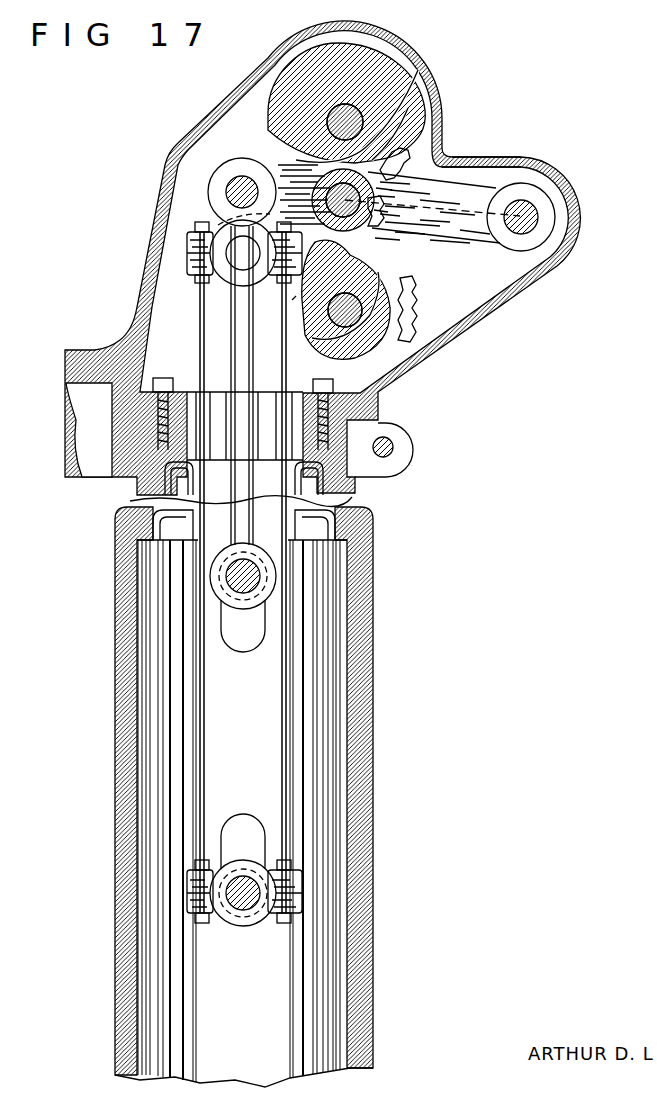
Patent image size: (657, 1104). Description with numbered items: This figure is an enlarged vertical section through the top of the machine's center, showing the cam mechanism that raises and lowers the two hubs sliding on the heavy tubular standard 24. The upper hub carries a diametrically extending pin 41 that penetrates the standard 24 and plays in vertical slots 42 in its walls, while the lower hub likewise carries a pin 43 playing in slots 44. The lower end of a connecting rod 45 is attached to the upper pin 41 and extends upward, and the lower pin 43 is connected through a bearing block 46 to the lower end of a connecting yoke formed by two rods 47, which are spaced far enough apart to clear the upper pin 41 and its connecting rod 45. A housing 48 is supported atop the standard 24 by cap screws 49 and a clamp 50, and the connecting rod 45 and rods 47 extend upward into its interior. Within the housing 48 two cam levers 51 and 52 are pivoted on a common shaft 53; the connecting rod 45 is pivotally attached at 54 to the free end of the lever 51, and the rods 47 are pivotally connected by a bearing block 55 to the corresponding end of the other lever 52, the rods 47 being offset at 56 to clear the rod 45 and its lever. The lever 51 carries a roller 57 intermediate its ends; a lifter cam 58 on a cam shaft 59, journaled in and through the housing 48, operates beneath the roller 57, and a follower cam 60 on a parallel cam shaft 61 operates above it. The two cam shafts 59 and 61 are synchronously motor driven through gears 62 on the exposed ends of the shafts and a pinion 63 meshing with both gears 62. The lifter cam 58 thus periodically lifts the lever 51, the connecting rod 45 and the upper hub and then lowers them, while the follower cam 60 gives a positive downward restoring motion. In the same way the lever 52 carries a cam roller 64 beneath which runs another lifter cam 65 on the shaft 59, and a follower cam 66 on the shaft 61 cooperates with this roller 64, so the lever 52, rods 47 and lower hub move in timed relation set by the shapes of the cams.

The tubular standard 24 is at (374, 853).
The pin 41 is at (224, 577).
The vertical slots 42 is at (237, 652).
The pin 43 is at (245, 912).
The slots 44 is at (256, 793).
The connecting rod 45 is at (348, 493).
The bearing block 46 is at (215, 924).
The rods 47 is at (282, 730).
The housing 48 is at (496, 324).
The cap screws 49 is at (175, 362).
The clamp 50 is at (366, 428).
The cam lever 51 is at (448, 164).
The cam lever 52 is at (433, 245).
The common shaft 53 is at (556, 220).
The pivotal attachment 54 is at (230, 178).
The bearing block 55 is at (215, 280).
The offset 56 is at (288, 373).
The roller 57 is at (282, 150).
The lifter cam 58 is at (362, 348).
The cam shaft 59 is at (336, 358).
The follower cam 60 is at (428, 105).
The cam shaft 61 is at (418, 70).
The gears 62 is at (430, 138).
The pinion 63 is at (382, 226).
The cam roller 64 is at (383, 253).
The lifter cam 65 is at (292, 300).
The follower cam 66 is at (268, 145).